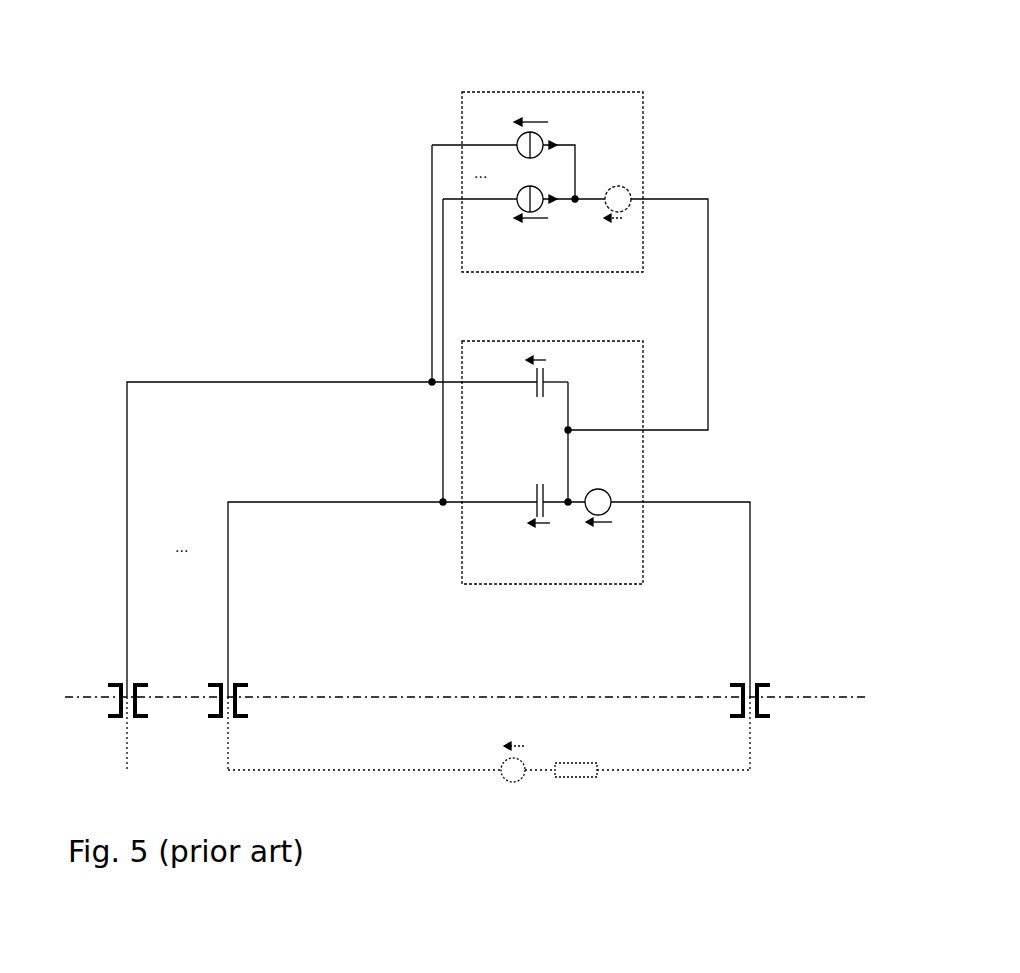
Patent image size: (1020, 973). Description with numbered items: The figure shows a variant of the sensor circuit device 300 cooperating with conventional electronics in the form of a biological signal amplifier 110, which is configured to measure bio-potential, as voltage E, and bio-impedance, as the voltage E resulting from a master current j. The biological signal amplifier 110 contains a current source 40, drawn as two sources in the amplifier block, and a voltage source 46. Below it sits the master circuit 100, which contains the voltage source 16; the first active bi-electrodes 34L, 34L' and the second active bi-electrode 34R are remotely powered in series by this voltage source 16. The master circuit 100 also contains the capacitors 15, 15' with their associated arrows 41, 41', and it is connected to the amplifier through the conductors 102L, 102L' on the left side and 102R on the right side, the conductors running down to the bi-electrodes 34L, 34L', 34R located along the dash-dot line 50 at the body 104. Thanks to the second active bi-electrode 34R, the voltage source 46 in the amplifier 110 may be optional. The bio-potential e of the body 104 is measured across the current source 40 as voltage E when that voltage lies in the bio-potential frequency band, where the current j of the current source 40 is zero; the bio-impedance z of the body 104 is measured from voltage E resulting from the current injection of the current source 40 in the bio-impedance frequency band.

The sensor circuit device 300 is at (162, 147).
The biological signal amplifier 110 is at (462, 106).
The current source 40 is at (520, 139).
The voltage source 46 is at (607, 190).
The master circuit 100 is at (628, 340).
The capacitor 15 is at (478, 522).
The capacitor (second) 15' is at (576, 342).
The capacitor voltage arrow 41 is at (506, 579).
The capacitor voltage arrow (second) 41' is at (544, 325).
The voltage source 16 is at (609, 510).
The left conductor 102L is at (335, 608).
The second left conductor 102L' is at (279, 548).
The right conductor 102R is at (677, 501).
The first active bi-electrode 34L is at (252, 666).
The first active bi-electrode 34L' is at (149, 666).
The second active bi-electrode 34R is at (766, 683).
The ground / pipeline line 50 is at (350, 696).
The body 104 is at (648, 766).